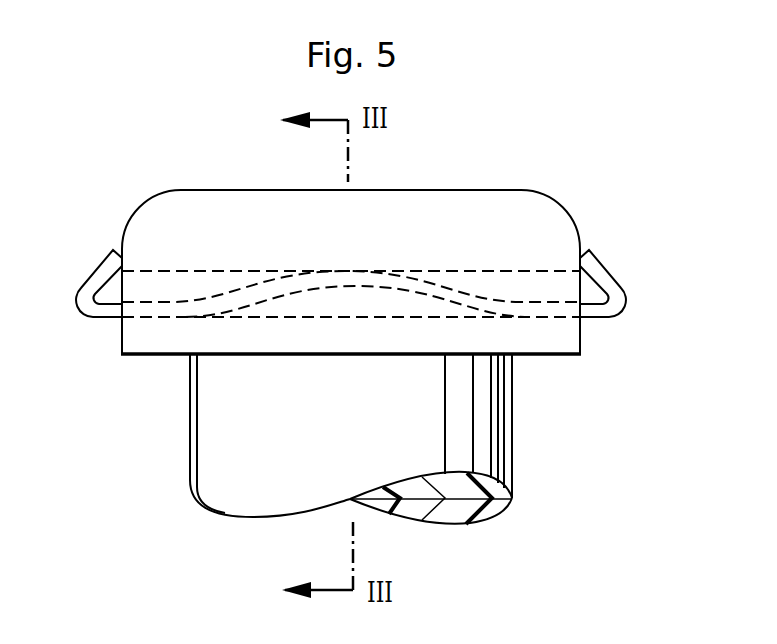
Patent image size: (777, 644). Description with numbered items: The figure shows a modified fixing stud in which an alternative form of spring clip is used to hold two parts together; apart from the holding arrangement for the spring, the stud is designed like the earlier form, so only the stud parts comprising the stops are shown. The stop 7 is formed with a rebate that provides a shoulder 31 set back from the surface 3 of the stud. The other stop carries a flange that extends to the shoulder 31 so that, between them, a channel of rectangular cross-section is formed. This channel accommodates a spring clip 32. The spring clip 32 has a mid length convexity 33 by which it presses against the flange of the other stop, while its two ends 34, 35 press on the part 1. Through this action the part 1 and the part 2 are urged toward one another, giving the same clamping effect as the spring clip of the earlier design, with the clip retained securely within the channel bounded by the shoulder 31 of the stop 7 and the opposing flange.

The part 1 is at (540, 468).
The part 2 is at (520, 533).
The surface 3 is at (512, 499).
The stop 7 is at (477, 337).
The shoulder 31 is at (191, 283).
The spring clip 32 is at (88, 278).
The mid length convexity 33 is at (360, 277).
The end 34 is at (112, 311).
The end 35 is at (604, 310).